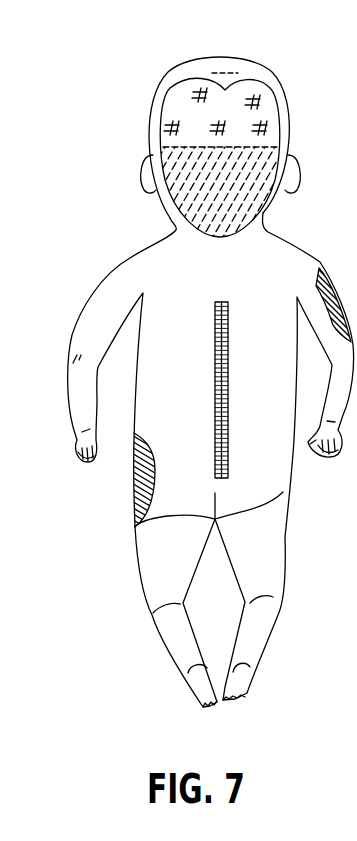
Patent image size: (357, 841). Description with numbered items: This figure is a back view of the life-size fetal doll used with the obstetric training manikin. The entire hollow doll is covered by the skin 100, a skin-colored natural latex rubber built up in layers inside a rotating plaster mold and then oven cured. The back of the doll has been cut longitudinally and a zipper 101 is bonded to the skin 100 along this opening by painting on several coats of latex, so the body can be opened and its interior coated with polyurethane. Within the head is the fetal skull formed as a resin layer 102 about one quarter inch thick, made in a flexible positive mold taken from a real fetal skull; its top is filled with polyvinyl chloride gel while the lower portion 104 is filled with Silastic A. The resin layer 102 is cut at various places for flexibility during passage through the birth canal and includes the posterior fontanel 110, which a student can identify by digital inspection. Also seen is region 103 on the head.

The skin 100 is at (160, 92).
The zipper 101 is at (227, 338).
The layer 102 is at (152, 123).
The upper face opening with mesh 103 is at (268, 117).
The lower portion 104 is at (253, 200).
The posterior fontanel 110 is at (225, 73).